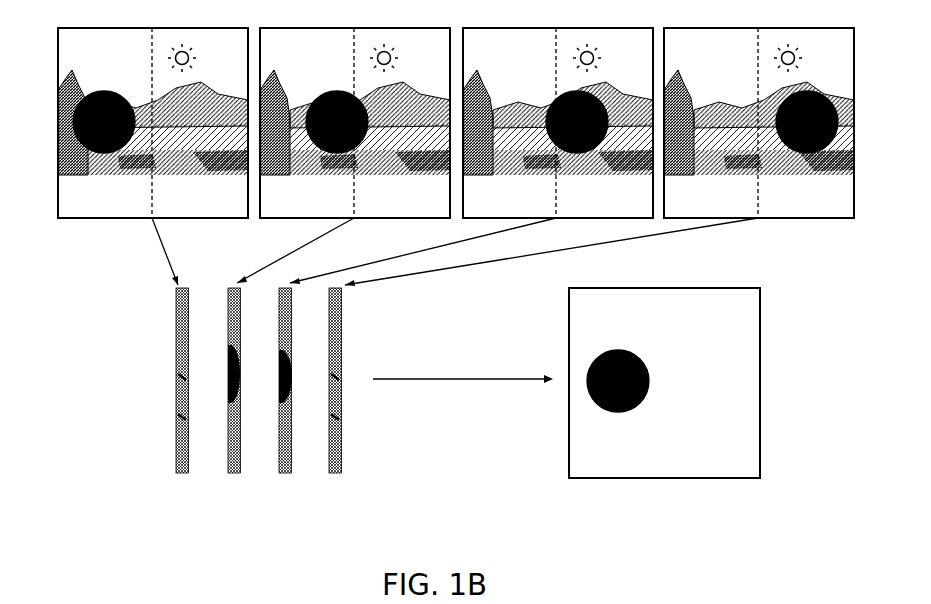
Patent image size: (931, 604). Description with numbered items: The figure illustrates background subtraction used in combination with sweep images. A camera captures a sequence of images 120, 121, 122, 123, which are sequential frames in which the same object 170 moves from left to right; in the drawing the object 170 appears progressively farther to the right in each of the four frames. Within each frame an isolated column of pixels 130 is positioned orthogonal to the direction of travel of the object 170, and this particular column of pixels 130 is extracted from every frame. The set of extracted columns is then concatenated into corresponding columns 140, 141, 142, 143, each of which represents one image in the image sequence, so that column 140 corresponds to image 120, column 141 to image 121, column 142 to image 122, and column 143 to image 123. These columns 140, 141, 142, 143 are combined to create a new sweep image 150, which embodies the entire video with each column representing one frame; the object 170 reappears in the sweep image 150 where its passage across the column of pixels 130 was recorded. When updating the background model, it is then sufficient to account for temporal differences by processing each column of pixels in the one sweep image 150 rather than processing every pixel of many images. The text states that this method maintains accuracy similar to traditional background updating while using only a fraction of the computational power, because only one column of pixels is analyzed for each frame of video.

The image 120 is at (153, 114).
The image 121 is at (355, 114).
The image 122 is at (558, 114).
The image 123 is at (759, 114).
The column of pixels 130 is at (166, 114).
The column 140 is at (180, 393).
The column 141 is at (232, 393).
The column 142 is at (283, 393).
The column 143 is at (333, 393).
The sweep image 150 is at (664, 374).
The object 170 is at (75, 106).